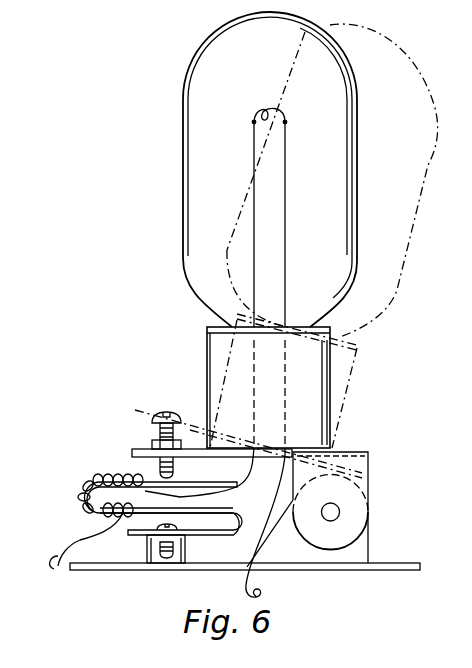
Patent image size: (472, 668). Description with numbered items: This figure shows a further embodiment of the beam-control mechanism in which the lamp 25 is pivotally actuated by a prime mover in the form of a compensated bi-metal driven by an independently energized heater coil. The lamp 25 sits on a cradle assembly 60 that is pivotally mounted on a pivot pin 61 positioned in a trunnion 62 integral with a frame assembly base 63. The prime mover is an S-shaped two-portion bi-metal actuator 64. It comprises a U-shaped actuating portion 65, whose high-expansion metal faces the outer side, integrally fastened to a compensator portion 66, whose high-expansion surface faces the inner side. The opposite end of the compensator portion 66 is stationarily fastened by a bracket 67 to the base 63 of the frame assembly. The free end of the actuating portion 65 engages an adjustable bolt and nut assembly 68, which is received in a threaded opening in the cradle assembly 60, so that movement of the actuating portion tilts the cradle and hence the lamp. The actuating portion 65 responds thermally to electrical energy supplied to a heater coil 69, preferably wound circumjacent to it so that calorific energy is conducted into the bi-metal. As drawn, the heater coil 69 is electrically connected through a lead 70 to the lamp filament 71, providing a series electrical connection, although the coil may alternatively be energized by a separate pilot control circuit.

The lamp 25 is at (192, 77).
The lamp filament 71 is at (262, 110).
The cradle assembly 60 is at (135, 450).
The adjustable bolt and nut assembly 68 is at (165, 412).
The U-shaped actuating portion 65 is at (198, 482).
The compensator portion 66 is at (166, 520).
The bracket 67 is at (186, 550).
The heater coil 69 is at (93, 487).
The lead 70 is at (244, 480).
The S-shaped two-portion bi-metal actuator 64 is at (235, 535).
The pivot pin 61 is at (336, 511).
The trunnion 62 is at (358, 550).
The frame assembly base 63 is at (394, 567).